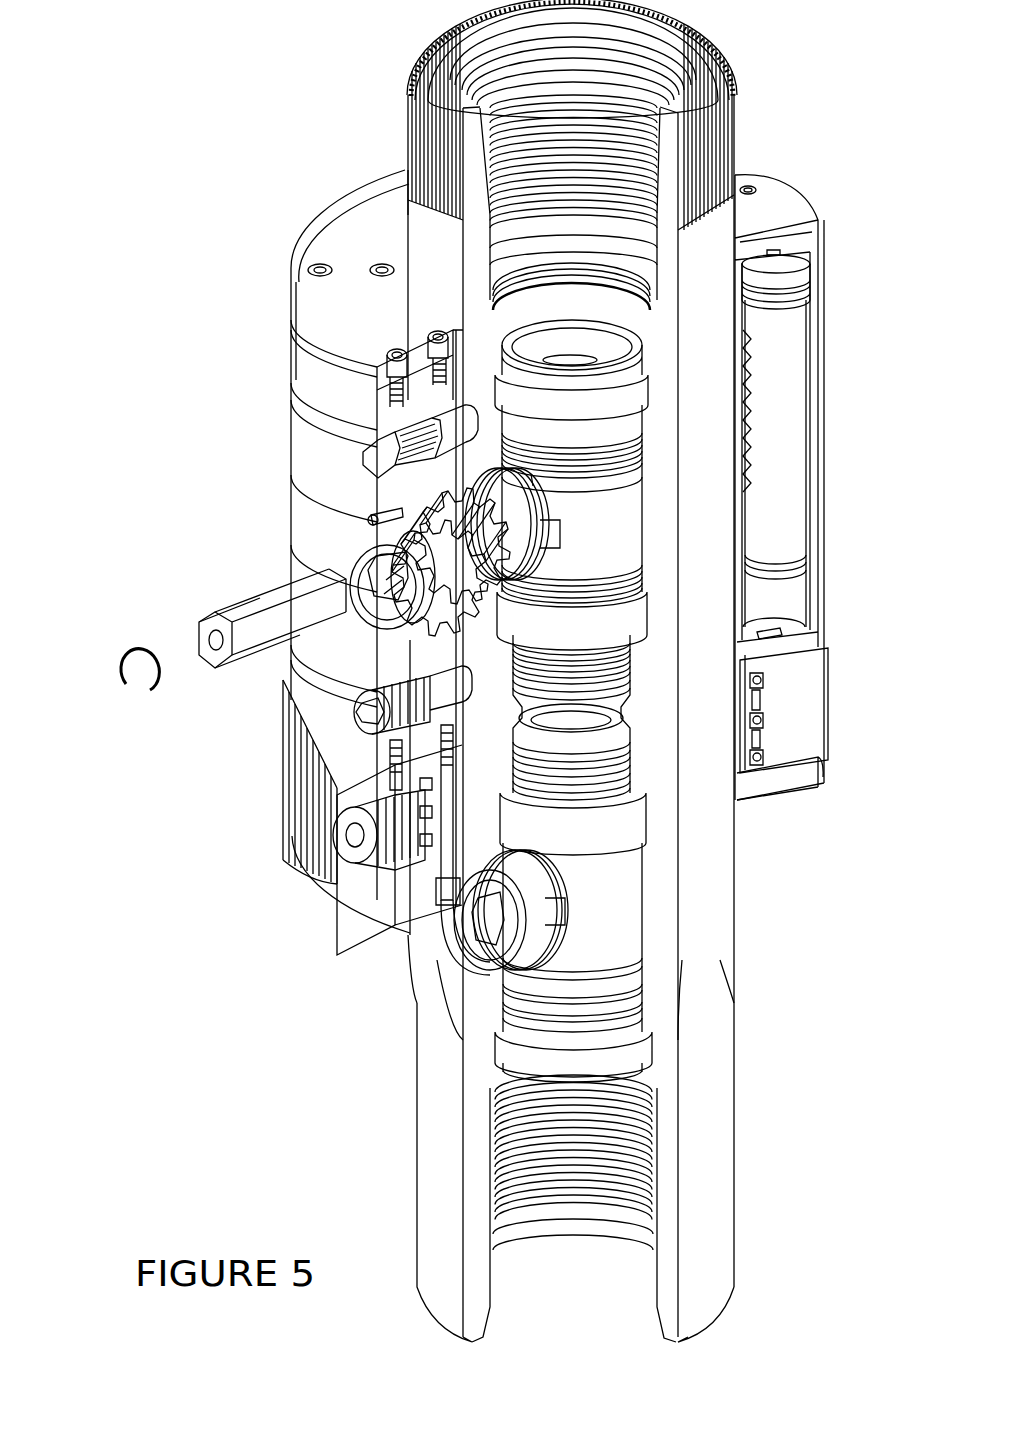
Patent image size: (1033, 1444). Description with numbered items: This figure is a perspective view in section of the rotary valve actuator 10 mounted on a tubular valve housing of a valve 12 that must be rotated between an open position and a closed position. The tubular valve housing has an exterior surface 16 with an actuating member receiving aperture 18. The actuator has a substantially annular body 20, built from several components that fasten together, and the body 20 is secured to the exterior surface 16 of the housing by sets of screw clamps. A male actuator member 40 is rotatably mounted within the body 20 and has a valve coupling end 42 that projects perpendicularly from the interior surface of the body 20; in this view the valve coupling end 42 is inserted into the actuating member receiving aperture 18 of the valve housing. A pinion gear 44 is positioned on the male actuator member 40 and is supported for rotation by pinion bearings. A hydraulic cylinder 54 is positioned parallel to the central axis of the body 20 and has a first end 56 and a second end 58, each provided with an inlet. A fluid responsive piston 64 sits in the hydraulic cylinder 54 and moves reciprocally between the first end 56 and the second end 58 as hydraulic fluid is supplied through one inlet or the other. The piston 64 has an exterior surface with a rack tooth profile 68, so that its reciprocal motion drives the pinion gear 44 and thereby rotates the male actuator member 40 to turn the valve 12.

The rotary valve actuator 10 is at (260, 150).
The valve 12 is at (406, 122).
The exterior surface 16 is at (415, 1140).
The actuating member receiving aperture 18 is at (540, 560).
The annular body 20 is at (291, 330).
The male actuator member 40 is at (213, 618).
The valve coupling end 42 is at (330, 575).
The pinion gear 44 is at (372, 520).
The hydraulic cylinder 54 is at (805, 592).
The first end 56 is at (808, 250).
The second end 58 is at (800, 624).
The fluid responsive piston 64 is at (790, 350).
The rack tooth profile 68 is at (760, 478).